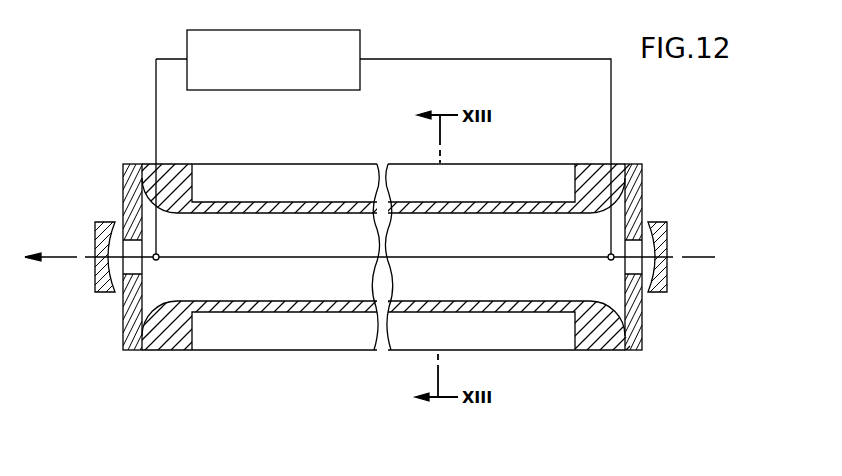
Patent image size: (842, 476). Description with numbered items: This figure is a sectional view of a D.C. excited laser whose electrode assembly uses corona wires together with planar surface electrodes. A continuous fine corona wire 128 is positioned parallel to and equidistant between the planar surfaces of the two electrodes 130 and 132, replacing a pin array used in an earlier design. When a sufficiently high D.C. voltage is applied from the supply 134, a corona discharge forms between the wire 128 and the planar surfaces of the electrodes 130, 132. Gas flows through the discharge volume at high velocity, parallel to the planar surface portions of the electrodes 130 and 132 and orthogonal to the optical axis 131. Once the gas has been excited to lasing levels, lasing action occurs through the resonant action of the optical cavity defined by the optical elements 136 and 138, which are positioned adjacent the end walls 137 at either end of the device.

The corona wire 128 is at (268, 258).
The electrode 130 is at (385, 257).
The optical axis 131 is at (88, 258).
The electrode 132 is at (318, 314).
The supply 134 is at (276, 30).
The optical element 136 is at (104, 222).
The end walls 137 is at (123, 170).
The optical element 138 is at (657, 226).